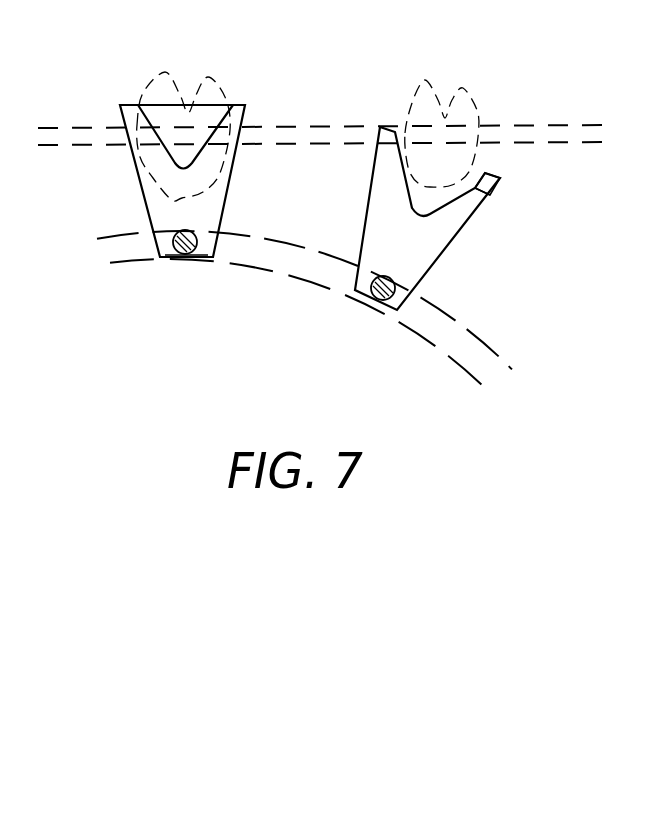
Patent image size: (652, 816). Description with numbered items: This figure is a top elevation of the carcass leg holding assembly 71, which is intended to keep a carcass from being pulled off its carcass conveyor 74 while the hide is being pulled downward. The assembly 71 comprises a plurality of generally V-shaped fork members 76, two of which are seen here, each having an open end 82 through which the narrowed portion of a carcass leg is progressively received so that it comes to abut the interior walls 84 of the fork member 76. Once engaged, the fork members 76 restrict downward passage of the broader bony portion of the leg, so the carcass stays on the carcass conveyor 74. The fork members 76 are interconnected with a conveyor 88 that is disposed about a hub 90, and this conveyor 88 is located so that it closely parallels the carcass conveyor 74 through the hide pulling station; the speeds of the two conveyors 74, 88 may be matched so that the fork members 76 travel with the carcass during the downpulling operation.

The carcass leg holding assembly 71 is at (534, 316).
The carcass conveyor 74 is at (542, 126).
The fork member 76 is at (228, 202).
The open end 82 is at (480, 163).
The interior wall 84 is at (493, 192).
The conveyor 88 is at (111, 253).
The hub 90 is at (450, 377).